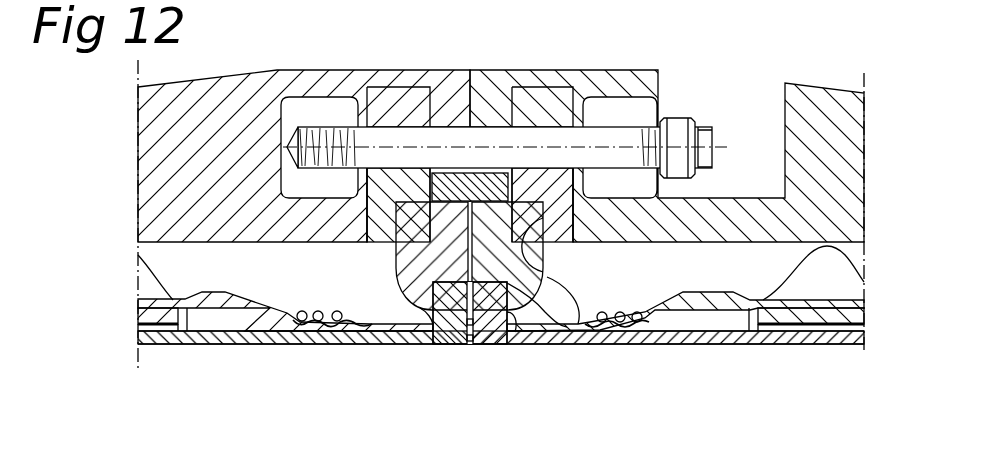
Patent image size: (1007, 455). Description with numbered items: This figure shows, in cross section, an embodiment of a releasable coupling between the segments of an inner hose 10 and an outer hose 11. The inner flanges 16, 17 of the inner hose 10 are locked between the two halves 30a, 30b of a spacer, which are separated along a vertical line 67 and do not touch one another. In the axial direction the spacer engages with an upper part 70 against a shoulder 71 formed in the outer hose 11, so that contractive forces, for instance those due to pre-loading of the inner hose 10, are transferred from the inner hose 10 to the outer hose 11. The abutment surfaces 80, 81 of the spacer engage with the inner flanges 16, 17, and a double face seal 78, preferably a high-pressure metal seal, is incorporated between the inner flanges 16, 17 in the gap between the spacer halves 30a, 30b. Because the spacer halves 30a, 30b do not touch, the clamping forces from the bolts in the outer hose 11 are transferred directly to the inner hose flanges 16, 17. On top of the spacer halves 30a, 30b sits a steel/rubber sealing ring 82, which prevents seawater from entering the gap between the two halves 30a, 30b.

The inner hose 10 is at (818, 355).
The outer hose 11 is at (843, 117).
The inner flange 16 is at (491, 345).
The inner flange 17 is at (447, 345).
The spacer half 30a is at (588, 345).
The spacer half 30b is at (433, 285).
The vertical line 67 is at (526, 345).
The upper part 70 is at (394, 272).
The shoulder 71 is at (543, 256).
The double face seal 78 is at (467, 345).
The abutment surface 80 is at (423, 345).
The abutment surface 81 is at (562, 345).
The steel/rubber sealing ring 82 is at (477, 175).